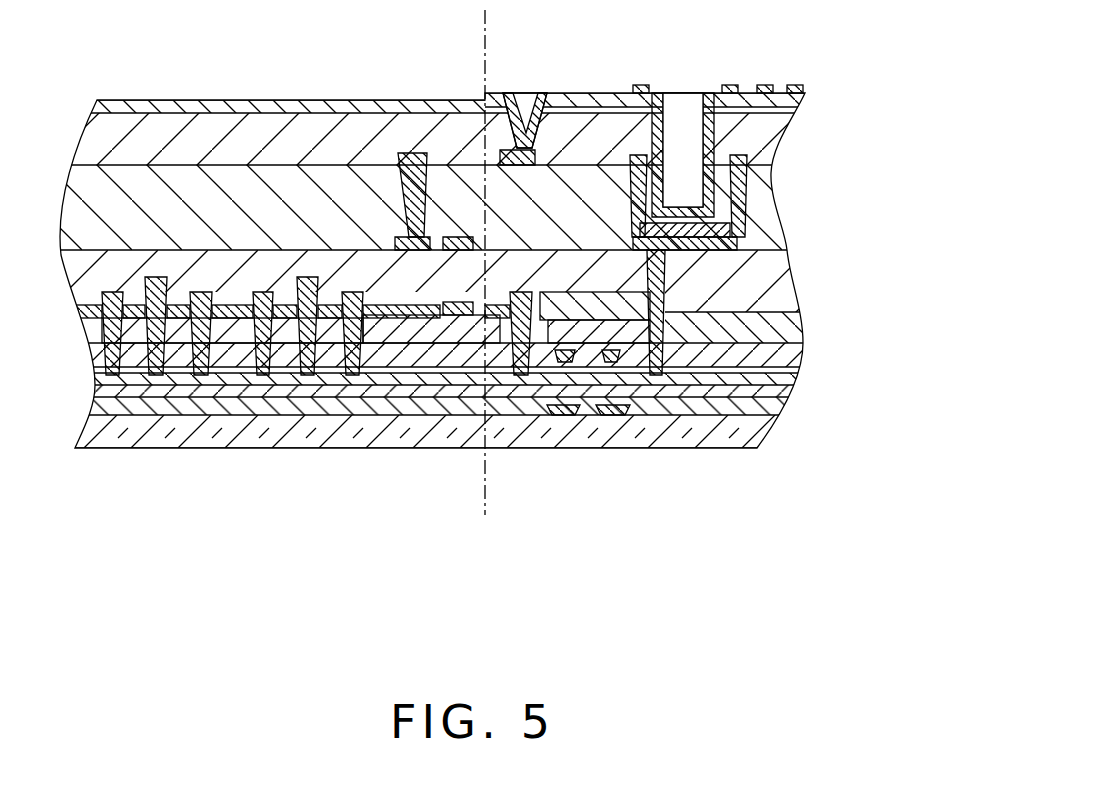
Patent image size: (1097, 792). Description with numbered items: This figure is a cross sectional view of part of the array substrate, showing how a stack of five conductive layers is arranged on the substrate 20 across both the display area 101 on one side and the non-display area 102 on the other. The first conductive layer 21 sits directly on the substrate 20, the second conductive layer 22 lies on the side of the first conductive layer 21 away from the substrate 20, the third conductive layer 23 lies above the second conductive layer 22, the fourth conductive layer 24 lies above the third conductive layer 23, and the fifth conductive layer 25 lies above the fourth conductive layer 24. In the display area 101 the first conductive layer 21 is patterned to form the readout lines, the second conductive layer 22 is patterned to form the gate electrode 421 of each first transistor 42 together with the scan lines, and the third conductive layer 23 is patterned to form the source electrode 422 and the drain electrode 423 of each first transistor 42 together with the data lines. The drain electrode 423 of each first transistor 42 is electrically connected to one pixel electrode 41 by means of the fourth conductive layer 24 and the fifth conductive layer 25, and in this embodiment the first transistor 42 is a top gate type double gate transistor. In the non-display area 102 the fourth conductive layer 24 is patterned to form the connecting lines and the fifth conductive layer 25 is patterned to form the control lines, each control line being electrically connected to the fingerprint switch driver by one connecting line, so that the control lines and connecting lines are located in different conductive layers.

The display area 101 is at (703, 38).
The non-display area 102 is at (147, 77).
The substrate 20 is at (113, 432).
The first conductive layer 21 is at (612, 415).
The second conductive layer 22 is at (565, 362).
The third conductive layer 23 is at (673, 305).
The fourth conductive layer 24 is at (398, 240).
The fifth conductive layer 25 is at (412, 167).
The pixel electrode 41 is at (795, 90).
The first transistor 42 is at (548, 365).
The gate electrode 421 is at (745, 372).
The source electrode 422 is at (655, 363).
The drain electrode 423 is at (673, 330).